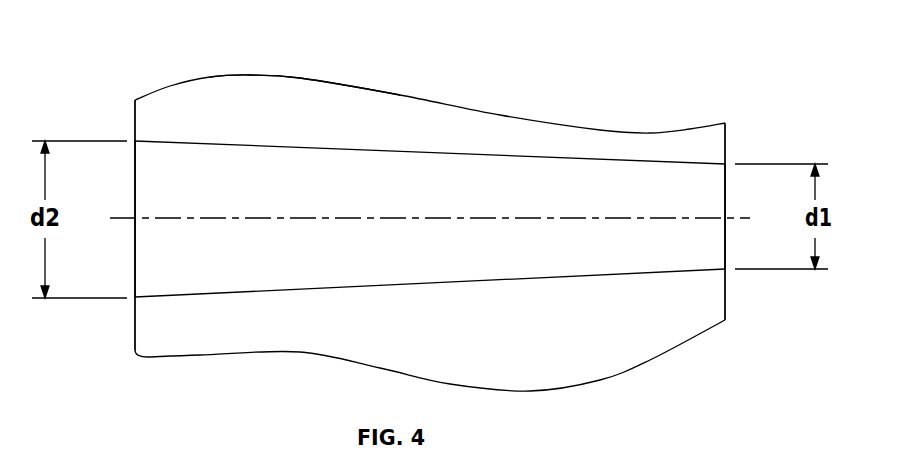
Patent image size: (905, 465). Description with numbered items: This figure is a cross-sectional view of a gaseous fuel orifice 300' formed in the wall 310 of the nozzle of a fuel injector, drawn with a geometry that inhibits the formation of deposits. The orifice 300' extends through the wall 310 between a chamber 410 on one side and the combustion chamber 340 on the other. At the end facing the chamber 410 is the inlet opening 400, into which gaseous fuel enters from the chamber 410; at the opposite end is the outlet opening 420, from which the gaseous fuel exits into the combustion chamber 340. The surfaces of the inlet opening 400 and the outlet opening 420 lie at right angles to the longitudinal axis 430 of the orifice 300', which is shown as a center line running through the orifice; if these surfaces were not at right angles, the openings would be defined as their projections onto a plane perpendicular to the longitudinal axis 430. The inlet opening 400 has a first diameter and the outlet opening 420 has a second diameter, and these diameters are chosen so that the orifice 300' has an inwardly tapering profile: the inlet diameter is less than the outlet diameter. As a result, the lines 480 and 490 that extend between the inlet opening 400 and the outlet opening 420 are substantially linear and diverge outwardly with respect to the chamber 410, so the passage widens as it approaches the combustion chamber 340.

The gaseous fuel orifice 300' is at (430, 233).
The wall 310 is at (289, 115).
The combustion chamber 340 is at (115, 255).
The inlet opening 400 is at (727, 203).
The chamber 410 is at (785, 256).
The outlet opening 420 is at (135, 180).
The longitudinal axis 430 is at (210, 218).
The line 480 is at (418, 282).
The line 490 is at (313, 147).